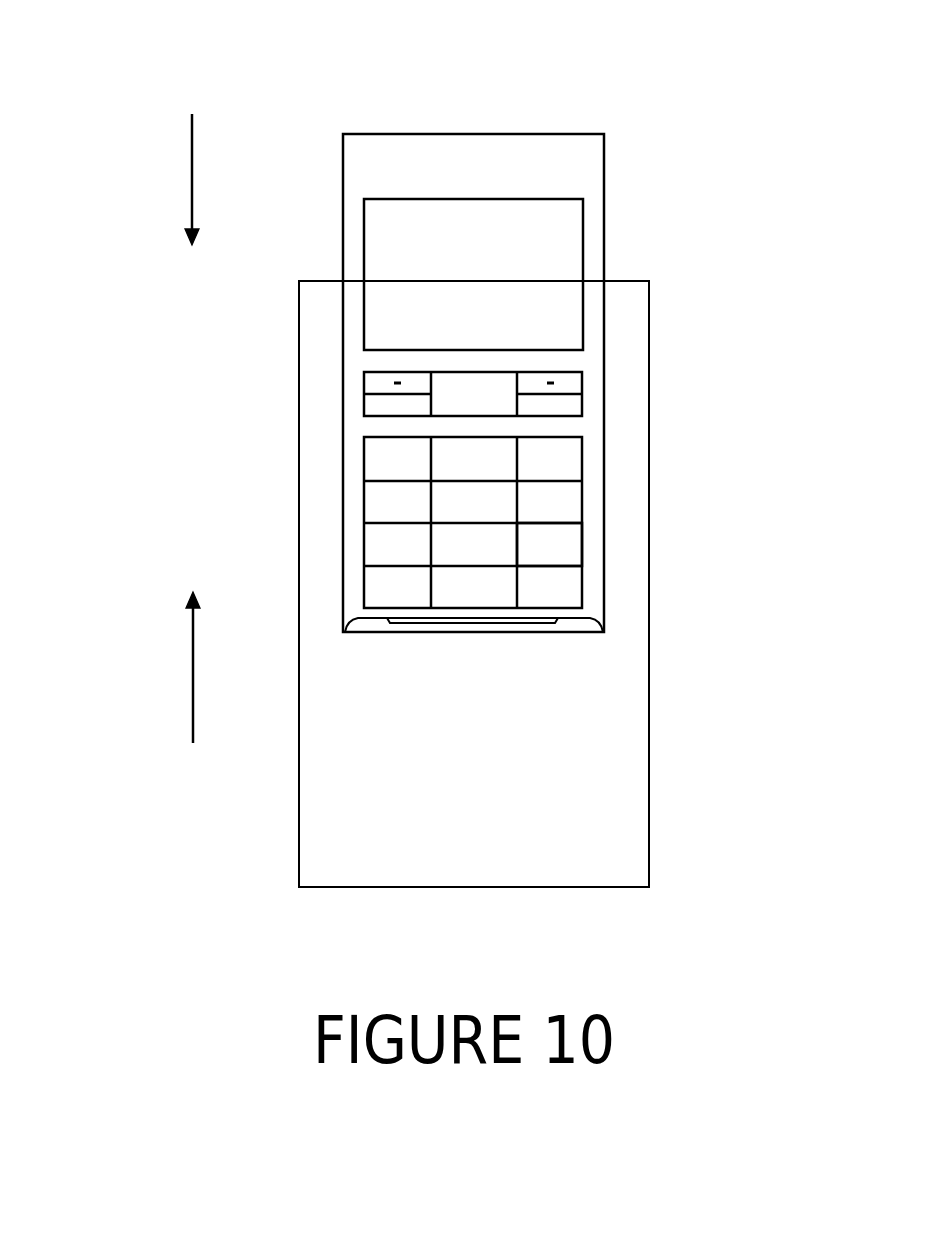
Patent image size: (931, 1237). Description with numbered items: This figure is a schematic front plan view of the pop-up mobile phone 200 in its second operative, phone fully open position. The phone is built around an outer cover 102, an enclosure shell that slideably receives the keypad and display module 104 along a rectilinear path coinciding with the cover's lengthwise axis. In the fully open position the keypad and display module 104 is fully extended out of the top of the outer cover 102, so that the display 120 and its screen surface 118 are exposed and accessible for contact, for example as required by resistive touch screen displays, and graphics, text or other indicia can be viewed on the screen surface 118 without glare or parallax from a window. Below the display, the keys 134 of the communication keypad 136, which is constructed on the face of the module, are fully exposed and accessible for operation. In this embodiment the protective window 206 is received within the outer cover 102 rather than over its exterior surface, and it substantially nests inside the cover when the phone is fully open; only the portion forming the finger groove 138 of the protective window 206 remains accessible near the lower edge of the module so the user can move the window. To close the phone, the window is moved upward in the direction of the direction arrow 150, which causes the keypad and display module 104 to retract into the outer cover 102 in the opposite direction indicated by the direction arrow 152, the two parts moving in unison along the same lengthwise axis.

The mobile phone 200 is at (672, 59).
The outer cover 102 is at (651, 732).
The keypad and display module 104 is at (474, 132).
The display 120 is at (586, 275).
The screen surface 118 is at (522, 281).
The keys 134 is at (564, 503).
The communication keypad 136 is at (583, 545).
The finger groove 138 is at (553, 617).
The protective window 206 is at (587, 624).
The direction arrow 152 is at (190, 155).
The direction arrow 150 is at (190, 698).